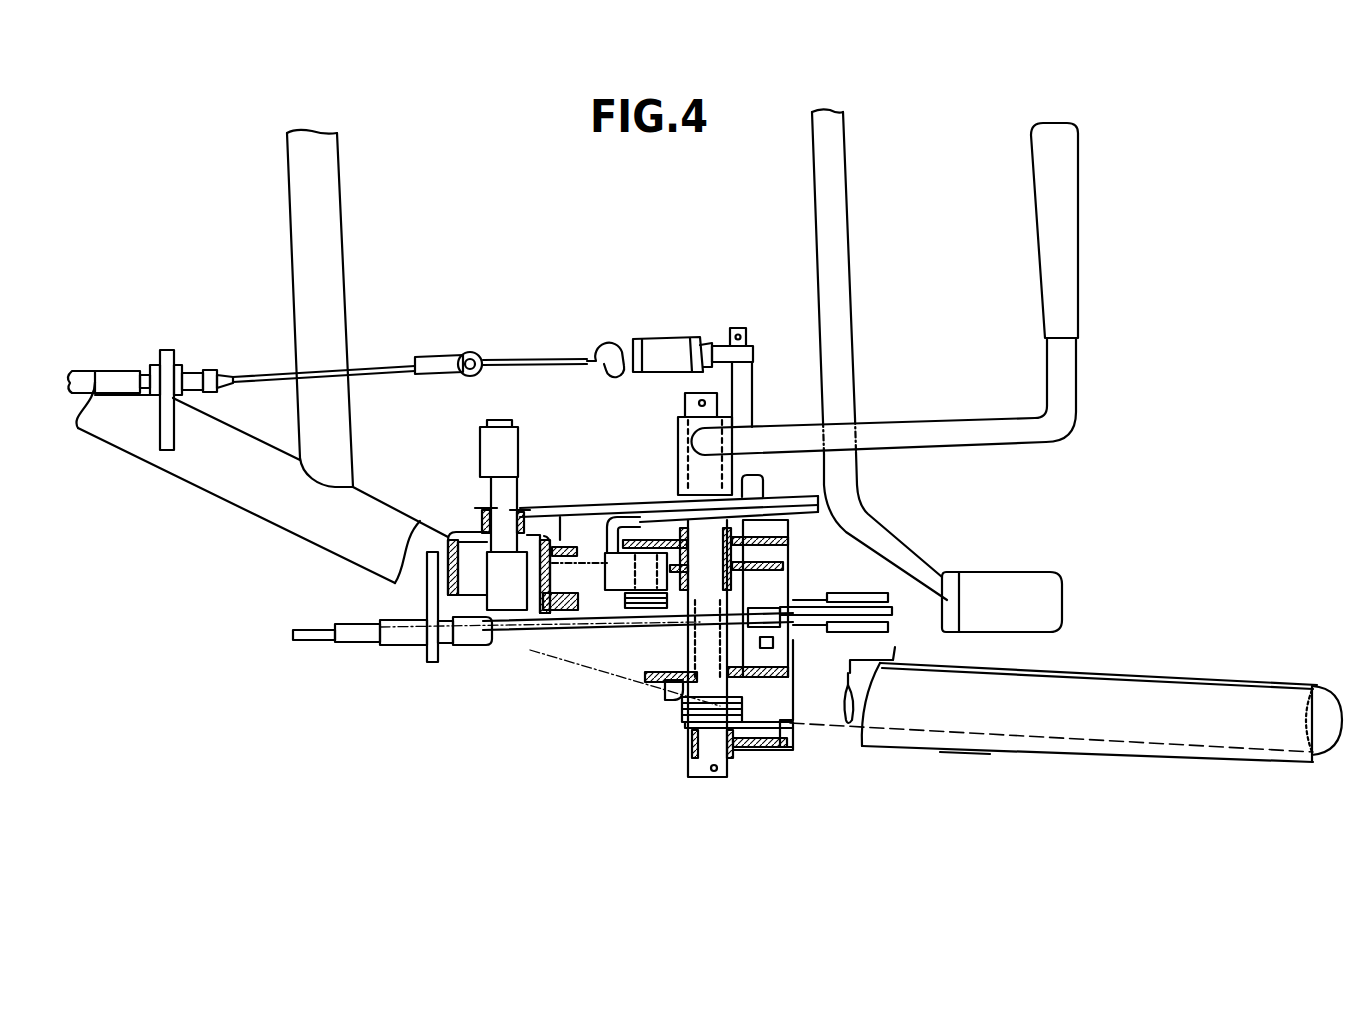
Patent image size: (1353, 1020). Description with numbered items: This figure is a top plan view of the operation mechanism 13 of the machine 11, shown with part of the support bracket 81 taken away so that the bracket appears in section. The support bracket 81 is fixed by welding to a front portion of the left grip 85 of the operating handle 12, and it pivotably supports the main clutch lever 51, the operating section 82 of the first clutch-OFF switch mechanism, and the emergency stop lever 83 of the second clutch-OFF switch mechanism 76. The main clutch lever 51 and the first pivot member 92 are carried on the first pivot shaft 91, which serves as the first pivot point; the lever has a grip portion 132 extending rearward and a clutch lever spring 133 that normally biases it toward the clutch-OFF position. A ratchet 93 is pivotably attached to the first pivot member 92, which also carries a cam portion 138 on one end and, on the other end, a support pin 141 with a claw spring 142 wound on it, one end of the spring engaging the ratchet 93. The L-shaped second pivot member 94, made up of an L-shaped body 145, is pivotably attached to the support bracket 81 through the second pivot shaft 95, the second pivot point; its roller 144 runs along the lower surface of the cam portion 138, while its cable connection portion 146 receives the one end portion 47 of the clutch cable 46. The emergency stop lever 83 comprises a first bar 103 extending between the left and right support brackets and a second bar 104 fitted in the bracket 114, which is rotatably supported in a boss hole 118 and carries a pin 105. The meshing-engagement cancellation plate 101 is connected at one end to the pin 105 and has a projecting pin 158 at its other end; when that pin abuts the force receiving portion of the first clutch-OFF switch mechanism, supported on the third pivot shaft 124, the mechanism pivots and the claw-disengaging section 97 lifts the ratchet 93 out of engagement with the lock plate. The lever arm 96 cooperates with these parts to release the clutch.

The handle assembly 11 is at (408, 143).
The operating handle 12 is at (280, 528).
The operation mechanism 13 is at (588, 470).
The clutch cable 46 is at (490, 640).
The one end portion 47 is at (830, 590).
The main clutch lever 51 is at (965, 750).
The second clutch-OFF switch mechanism 76 is at (563, 483).
The support bracket 81 is at (786, 686).
The operating section 82 is at (1058, 572).
The emergency stop lever 83 is at (858, 267).
The left grip 85 is at (1338, 690).
The first pivot shaft 91 is at (703, 779).
The first pivot member 92 is at (650, 635).
The ratchet 93 is at (605, 592).
The second pivot member 94 is at (945, 575).
The second pivot shaft 95 is at (807, 593).
The link 96 is at (803, 578).
The claw-disengaging section 97 is at (593, 497).
The meshing-engagement cancellation plate 101 is at (658, 497).
The first bar 103 is at (835, 182).
The second bar 104 is at (550, 612).
The pin 105 is at (535, 493).
The bracket 114 is at (425, 590).
The boss hole 118 is at (488, 508).
The third pivot shaft 124 is at (776, 458).
The grip portion 132 is at (1118, 757).
The clutch lever spring 133 is at (682, 718).
The cam portion 138 is at (873, 668).
The support pin 141 is at (635, 495).
The claw spring 142 is at (640, 610).
The roller 144 is at (890, 623).
The L-shaped body 145 is at (897, 647).
The cable connection portion 146 is at (786, 733).
The projecting pin 158 is at (778, 480).